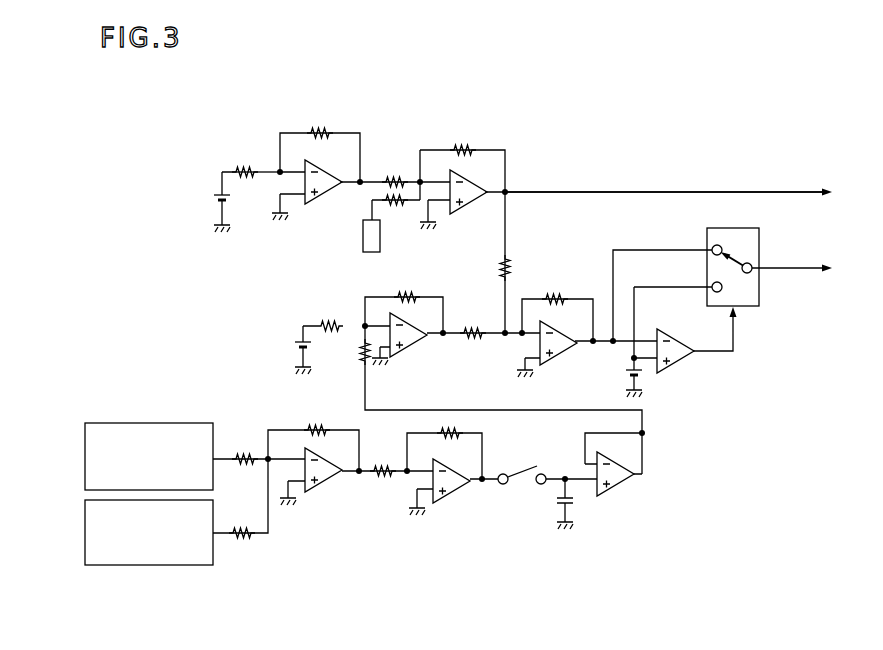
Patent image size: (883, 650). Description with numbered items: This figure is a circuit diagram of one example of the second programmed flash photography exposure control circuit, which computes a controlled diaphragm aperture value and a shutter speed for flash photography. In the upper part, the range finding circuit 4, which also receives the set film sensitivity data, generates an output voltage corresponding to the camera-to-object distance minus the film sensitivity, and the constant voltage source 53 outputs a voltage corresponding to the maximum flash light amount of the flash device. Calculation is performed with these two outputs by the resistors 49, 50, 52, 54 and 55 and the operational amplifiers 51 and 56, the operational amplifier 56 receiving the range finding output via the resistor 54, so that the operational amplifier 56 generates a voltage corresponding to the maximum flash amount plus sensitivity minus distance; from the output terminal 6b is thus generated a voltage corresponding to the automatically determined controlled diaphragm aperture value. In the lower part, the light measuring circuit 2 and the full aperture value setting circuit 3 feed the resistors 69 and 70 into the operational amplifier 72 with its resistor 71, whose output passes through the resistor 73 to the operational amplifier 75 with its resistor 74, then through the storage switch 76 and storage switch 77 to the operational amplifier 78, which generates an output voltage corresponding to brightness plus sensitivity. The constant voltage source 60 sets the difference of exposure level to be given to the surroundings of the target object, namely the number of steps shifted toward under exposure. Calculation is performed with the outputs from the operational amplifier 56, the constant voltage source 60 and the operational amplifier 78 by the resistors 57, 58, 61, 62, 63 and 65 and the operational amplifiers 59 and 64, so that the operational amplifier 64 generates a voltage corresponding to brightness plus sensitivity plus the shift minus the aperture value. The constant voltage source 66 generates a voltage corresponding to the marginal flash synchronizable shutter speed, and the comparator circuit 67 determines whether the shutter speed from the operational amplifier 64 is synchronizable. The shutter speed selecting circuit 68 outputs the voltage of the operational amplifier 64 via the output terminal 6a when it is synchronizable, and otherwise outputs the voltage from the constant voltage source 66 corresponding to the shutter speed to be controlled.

The light measuring circuit 2 is at (190, 423).
The full aperture value setting circuit 3 is at (193, 565).
The range finding circuit 4 is at (362, 240).
The output terminal 6a is at (806, 267).
The output terminal 6b is at (682, 192).
The resistor 49 is at (247, 180).
The resistor 50 is at (320, 128).
The operational amplifier 51 is at (323, 197).
The resistor 52 is at (395, 177).
The constant voltage source 53 is at (216, 198).
The resistor 54 is at (398, 207).
The resistor 55 is at (463, 145).
The operational amplifier 56 is at (470, 205).
The resistor 57 is at (511, 262).
The resistor 58 is at (412, 292).
The operational amplifier 59 is at (430, 343).
The constant voltage source 60 is at (296, 346).
The resistor 61 is at (474, 326).
The resistor 62 is at (332, 318).
The resistor 63 is at (557, 292).
The operational amplifier 64 is at (556, 353).
The resistor 65 is at (358, 357).
The constant voltage source 66 is at (624, 376).
The comparator circuit 67 is at (690, 363).
The shutter speed selecting circuit 68 is at (740, 237).
The resistor 69 is at (247, 452).
The resistor 70 is at (245, 540).
The resistor 71 is at (322, 425).
The operational amplifier 72 is at (328, 491).
The resistor 73 is at (384, 478).
The resistor 74 is at (462, 438).
The operational amplifier 75 is at (455, 499).
The storage switch 76 is at (530, 466).
The storage switch 77 is at (556, 516).
The operational amplifier 78 is at (620, 496).